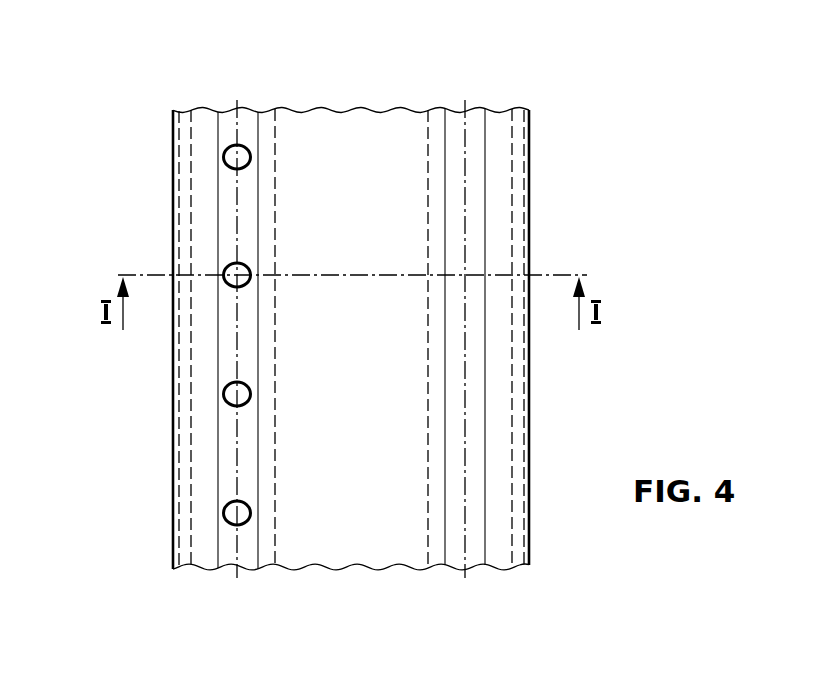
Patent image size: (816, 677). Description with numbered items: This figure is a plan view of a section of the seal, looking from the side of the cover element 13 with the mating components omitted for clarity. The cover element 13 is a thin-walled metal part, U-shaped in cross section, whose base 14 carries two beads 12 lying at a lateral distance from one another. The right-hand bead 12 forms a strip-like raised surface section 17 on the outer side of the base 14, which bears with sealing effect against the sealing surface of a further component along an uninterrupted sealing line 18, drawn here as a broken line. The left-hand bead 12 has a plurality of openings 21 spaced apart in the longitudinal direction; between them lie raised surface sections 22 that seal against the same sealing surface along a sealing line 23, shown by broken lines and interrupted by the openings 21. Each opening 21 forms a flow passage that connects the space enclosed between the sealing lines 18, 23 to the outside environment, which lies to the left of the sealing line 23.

The bead 12 is at (228, 357).
The cover element 13 is at (347, 524).
The base 14 is at (346, 156).
The raised surface section 17 is at (474, 193).
The sealing line 18 is at (467, 130).
The openings 21 is at (232, 394).
The raised surface sections 22 is at (227, 193).
The sealing line 23 is at (240, 128).